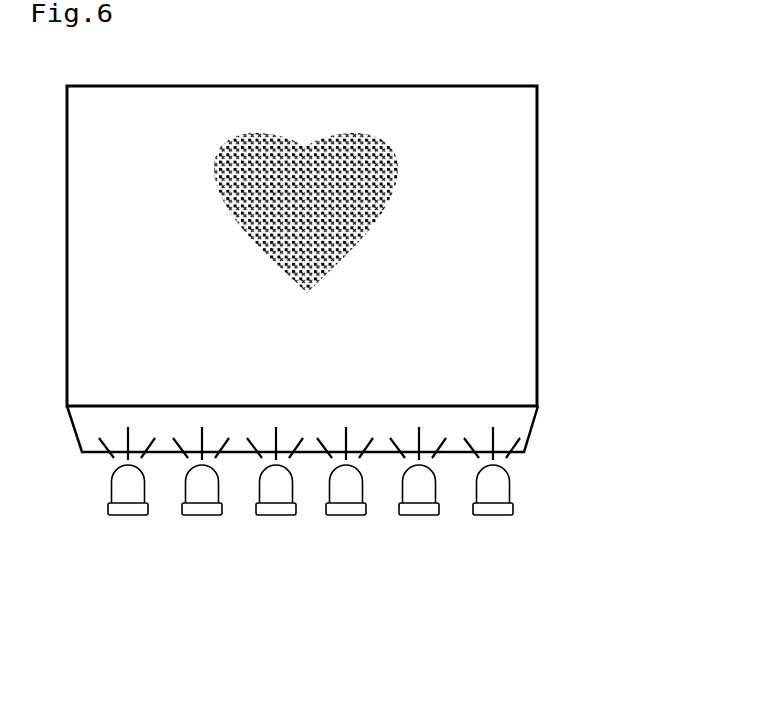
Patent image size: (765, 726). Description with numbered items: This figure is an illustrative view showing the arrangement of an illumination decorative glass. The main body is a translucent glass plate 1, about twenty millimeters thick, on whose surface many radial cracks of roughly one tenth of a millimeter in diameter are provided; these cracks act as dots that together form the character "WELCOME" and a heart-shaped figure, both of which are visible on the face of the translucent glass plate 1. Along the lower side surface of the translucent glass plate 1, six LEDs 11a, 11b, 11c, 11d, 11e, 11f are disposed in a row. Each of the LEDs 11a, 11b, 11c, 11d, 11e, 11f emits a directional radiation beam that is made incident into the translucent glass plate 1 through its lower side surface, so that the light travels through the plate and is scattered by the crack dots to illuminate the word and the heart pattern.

The translucent glass plate 1 is at (523, 265).
The LED 11a is at (127, 515).
The LED 11b is at (201, 515).
The LED 11c is at (275, 515).
The LED 11d is at (345, 515).
The LED 11e is at (418, 515).
The LED 11f is at (492, 515).